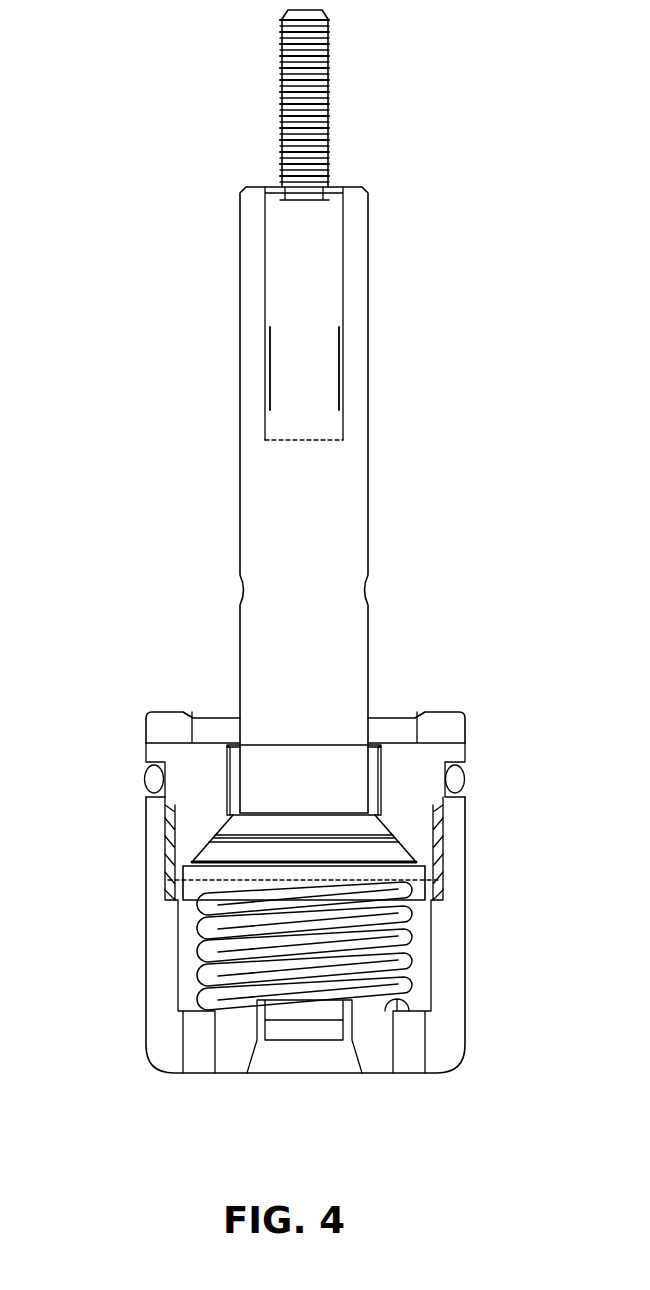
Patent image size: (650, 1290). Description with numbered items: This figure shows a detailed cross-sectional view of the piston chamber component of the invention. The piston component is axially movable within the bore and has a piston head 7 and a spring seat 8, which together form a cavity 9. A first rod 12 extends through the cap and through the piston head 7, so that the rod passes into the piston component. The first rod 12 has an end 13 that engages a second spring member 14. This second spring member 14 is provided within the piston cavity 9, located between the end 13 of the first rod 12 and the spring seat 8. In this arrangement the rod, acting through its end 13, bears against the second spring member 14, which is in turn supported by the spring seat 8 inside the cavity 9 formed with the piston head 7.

The piston head 7 is at (187, 777).
The spring seat 8 is at (162, 1027).
The cavity 9 is at (197, 957).
The first rod 12 is at (260, 469).
The end 13 is at (195, 870).
The second spring member 14 is at (388, 893).